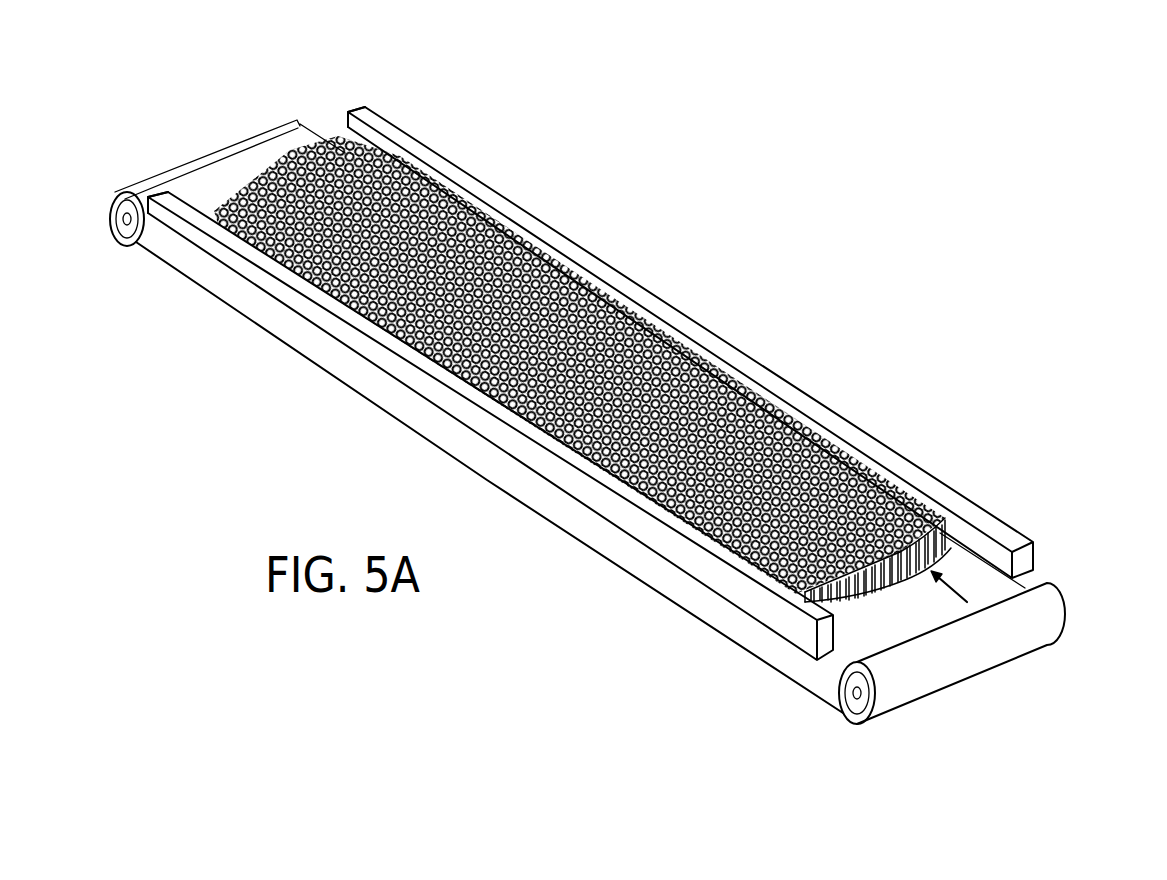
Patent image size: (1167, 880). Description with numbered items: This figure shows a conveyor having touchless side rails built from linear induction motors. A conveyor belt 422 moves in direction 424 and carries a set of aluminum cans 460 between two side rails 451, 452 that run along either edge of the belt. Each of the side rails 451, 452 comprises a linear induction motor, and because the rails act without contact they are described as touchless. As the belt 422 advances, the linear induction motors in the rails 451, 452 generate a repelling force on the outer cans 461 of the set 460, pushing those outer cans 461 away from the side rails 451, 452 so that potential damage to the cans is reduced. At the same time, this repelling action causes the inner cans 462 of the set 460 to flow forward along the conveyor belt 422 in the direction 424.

The conveyor belt 422 is at (1037, 583).
The direction 424 is at (961, 579).
The side rail 451 is at (647, 533).
The side rail 452 is at (930, 470).
The set of aluminum cans 460 is at (690, 342).
The outer cans 461 is at (177, 197).
The inner cans 462 is at (250, 163).